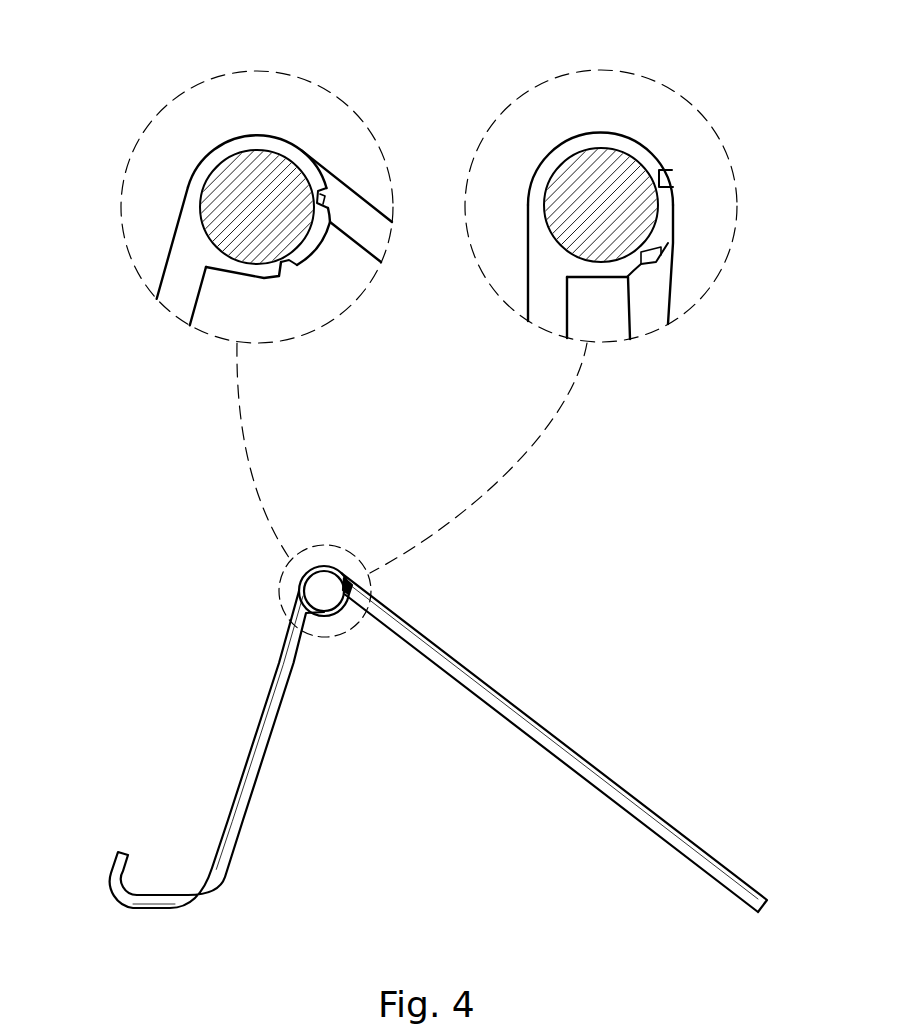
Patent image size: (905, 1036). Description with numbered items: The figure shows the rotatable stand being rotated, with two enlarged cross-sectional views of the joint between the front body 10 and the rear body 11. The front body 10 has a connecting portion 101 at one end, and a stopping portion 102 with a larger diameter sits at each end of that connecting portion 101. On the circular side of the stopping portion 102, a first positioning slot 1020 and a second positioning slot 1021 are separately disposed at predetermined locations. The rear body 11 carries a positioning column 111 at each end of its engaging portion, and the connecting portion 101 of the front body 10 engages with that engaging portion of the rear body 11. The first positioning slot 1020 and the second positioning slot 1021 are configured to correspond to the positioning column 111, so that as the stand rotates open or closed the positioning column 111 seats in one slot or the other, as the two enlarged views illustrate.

The front body 10 is at (172, 273).
The rear body 11 is at (377, 233).
The connecting portion 101 is at (234, 163).
The stopping portion 102 is at (198, 172).
The first positioning slot 1020 is at (330, 191).
The second positioning slot 1021 is at (291, 268).
The positioning column 111 is at (514, 215).